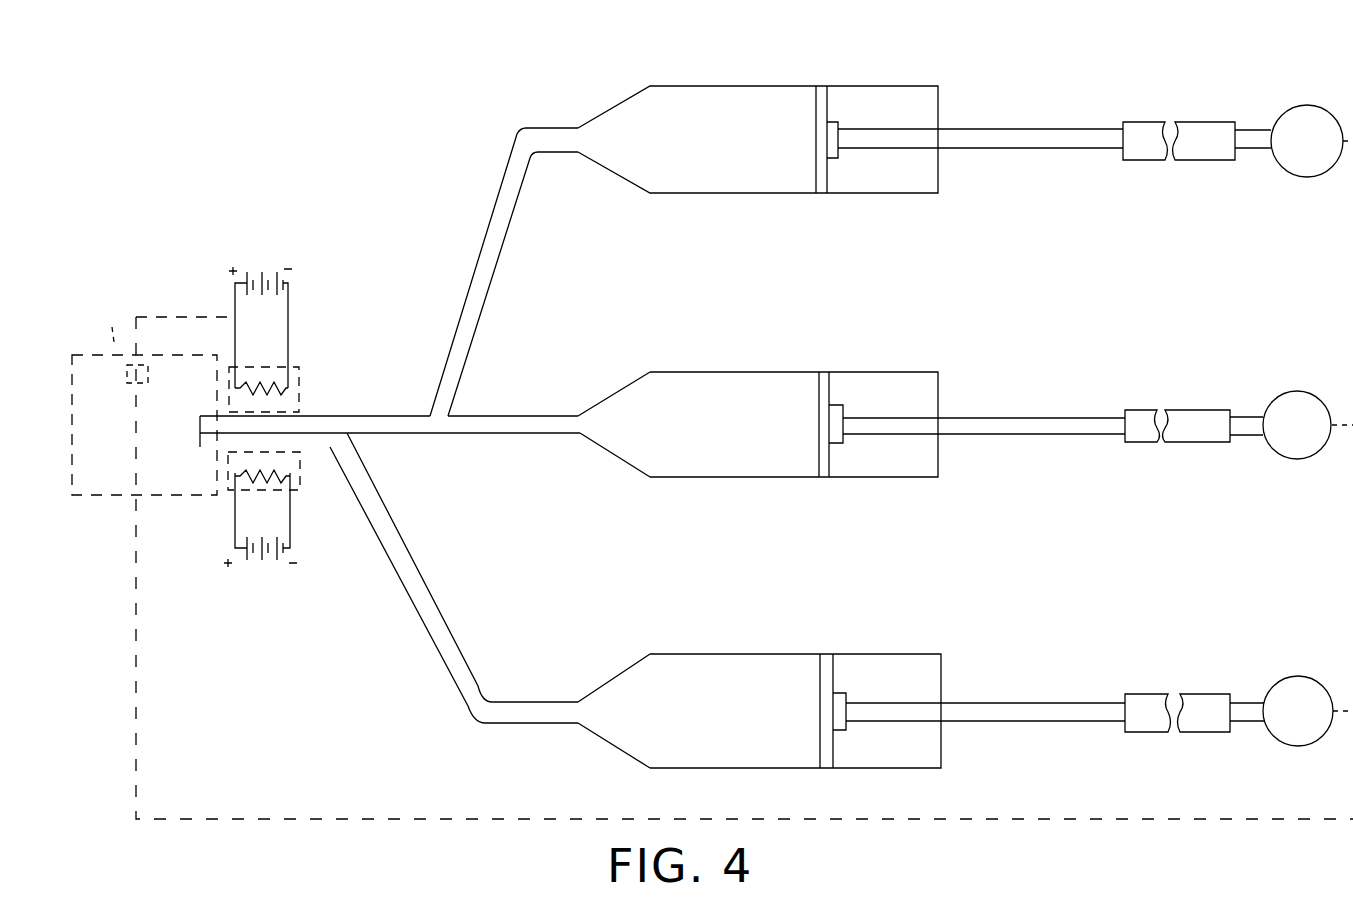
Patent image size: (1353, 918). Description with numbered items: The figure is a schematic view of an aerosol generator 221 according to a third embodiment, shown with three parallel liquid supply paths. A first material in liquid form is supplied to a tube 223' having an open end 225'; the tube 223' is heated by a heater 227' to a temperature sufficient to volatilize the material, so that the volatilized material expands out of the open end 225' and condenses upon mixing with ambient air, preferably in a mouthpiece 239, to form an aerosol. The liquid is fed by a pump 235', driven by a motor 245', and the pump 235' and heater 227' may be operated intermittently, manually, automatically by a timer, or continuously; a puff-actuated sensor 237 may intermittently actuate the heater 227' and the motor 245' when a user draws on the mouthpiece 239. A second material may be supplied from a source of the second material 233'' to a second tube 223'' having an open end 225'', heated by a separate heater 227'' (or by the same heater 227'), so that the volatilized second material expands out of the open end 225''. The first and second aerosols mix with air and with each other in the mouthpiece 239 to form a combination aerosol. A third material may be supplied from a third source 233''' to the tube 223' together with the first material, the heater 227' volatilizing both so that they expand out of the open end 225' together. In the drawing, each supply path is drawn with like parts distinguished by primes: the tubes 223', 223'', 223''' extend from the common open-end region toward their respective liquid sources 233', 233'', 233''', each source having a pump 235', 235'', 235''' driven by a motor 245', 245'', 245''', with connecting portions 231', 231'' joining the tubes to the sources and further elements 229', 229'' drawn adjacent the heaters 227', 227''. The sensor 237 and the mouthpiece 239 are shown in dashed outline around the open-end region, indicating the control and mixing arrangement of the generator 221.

The aerosol generator 221 is at (240, 153).
The tube 223' is at (390, 391).
The second tube 223'' is at (454, 578).
The shape memory beam branch 223''' is at (507, 272).
The open end 225' is at (188, 336).
The open end 225'' is at (177, 490).
The heater 227' is at (289, 364).
The separate heater 227'' is at (297, 500).
The battery 229' is at (297, 296).
The battery 229'' is at (291, 559).
The connecting arm 231' is at (580, 417).
The connecting arm 231'' is at (565, 711).
The cylinder 233' is at (794, 395).
The source of the second material 233'' is at (795, 679).
The third source of liquid material 233''' is at (758, 124).
The pump 235' is at (972, 395).
The piston 235'' is at (972, 679).
The piston 235''' is at (969, 124).
The puff-actuated sensor 237 is at (153, 340).
The mouthpiece 239 is at (70, 468).
The motor 245' is at (1228, 395).
The motor 245'' is at (1229, 683).
The motor 245''' is at (1237, 117).